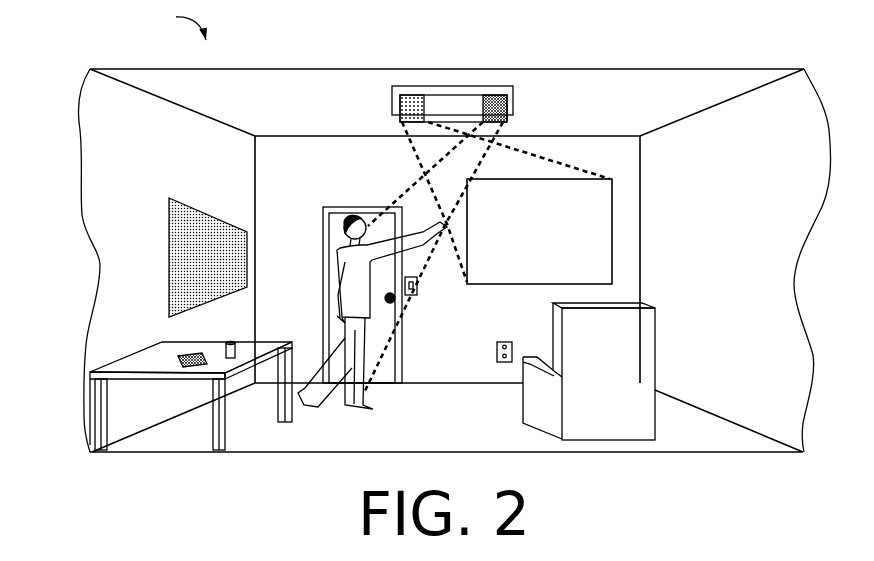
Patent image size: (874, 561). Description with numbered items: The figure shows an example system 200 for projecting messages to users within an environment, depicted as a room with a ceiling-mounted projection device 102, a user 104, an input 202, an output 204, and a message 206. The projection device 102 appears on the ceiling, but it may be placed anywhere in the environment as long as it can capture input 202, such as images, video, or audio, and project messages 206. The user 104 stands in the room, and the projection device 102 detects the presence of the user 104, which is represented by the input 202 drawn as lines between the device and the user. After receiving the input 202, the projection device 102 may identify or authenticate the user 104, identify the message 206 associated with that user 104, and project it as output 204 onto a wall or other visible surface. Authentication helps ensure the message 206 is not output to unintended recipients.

The system 200 is at (454, 230).
The projection device 102 is at (455, 85).
The user 104 is at (345, 213).
The input 202 is at (415, 180).
The output 204 is at (542, 157).
The message 206 is at (522, 256).